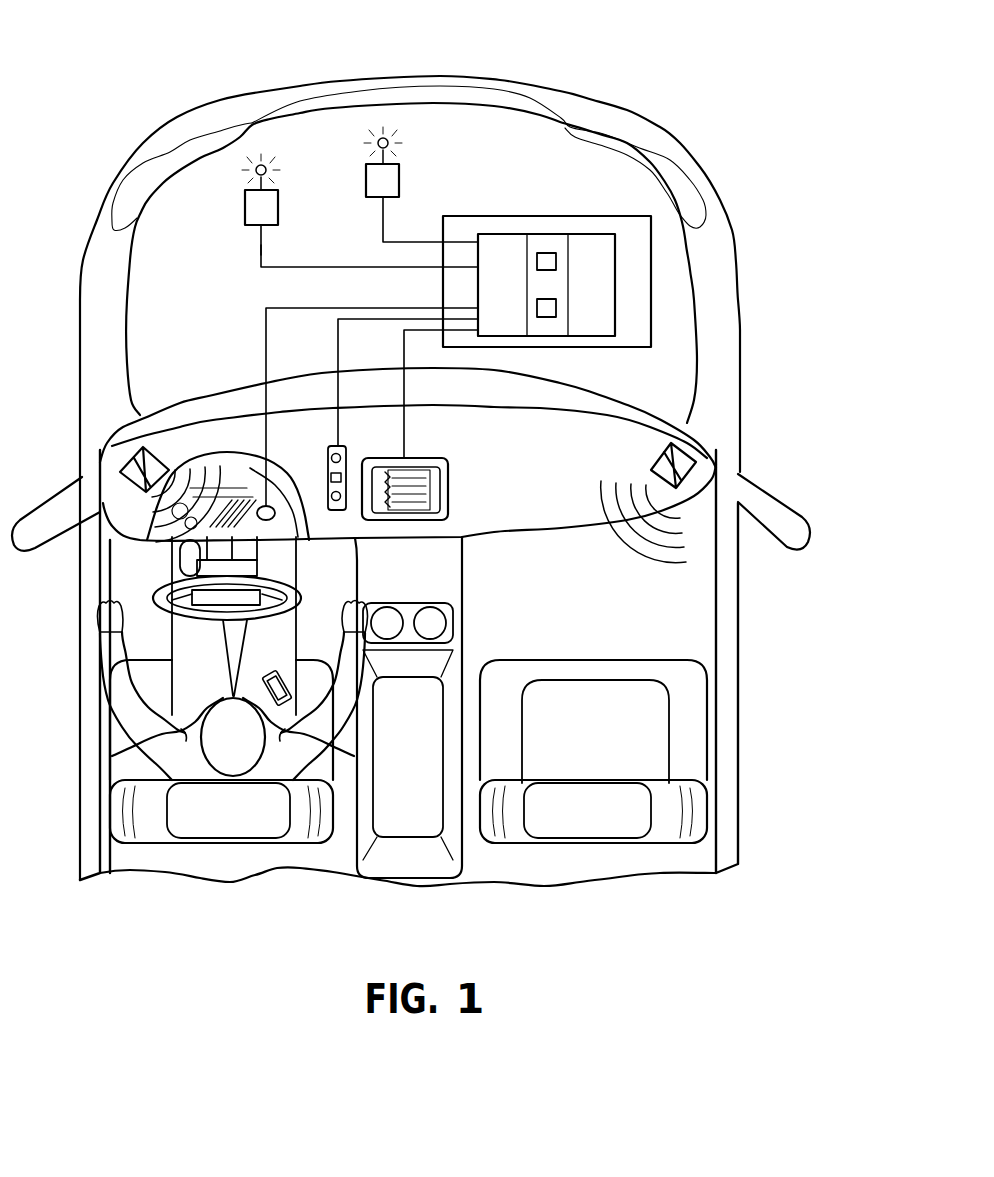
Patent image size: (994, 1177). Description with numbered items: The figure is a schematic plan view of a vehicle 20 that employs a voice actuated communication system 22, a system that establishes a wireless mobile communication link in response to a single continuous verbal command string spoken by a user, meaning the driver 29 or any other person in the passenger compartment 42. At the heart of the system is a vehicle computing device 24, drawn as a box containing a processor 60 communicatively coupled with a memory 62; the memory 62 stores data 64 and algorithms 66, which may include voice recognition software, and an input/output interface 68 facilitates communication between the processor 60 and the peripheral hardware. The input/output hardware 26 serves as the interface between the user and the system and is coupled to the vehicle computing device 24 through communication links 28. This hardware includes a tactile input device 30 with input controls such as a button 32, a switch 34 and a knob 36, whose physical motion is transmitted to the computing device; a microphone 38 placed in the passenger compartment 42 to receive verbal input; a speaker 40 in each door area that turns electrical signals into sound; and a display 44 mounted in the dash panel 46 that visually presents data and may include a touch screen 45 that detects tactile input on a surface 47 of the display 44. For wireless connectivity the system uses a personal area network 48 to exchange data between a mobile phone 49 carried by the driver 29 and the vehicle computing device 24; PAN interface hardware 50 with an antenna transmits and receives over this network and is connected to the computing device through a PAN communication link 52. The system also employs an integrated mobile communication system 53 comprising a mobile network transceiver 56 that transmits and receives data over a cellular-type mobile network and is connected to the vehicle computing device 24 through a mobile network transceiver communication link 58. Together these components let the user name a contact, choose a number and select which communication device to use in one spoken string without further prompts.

The vehicle 20 is at (247, 92).
The voice actuated communication system 22 is at (490, 138).
The vehicle computing device 24 is at (658, 296).
The input/output hardware 26 is at (127, 462).
The communication links 28 is at (266, 330).
The driver 29 is at (112, 756).
The tactile input device 30 is at (339, 447).
The button 32 is at (342, 457).
The switch 34 is at (331, 478).
The knob 36 is at (329, 510).
The microphone 38 is at (270, 540).
The speaker 40 is at (95, 510).
The passenger compartment 42 is at (577, 618).
The display 44 is at (449, 500).
The touch screen 45 is at (406, 512).
The dash panel 46 is at (545, 532).
The surface 47 is at (437, 468).
The personal area network 48 is at (400, 155).
The mobile phone 49 is at (297, 690).
The PAN interface hardware 50 is at (366, 178).
The PAN communication link 52 is at (410, 242).
The integrated mobile communication system 53 is at (255, 246).
The mobile network transceiver 56 is at (245, 207).
The mobile network transceiver communication link 58 is at (332, 267).
The processor 60 is at (652, 242).
The memory 62 is at (556, 234).
The data 64 is at (543, 253).
The algorithms 66 is at (546, 318).
The input/output interface 68 is at (498, 337).